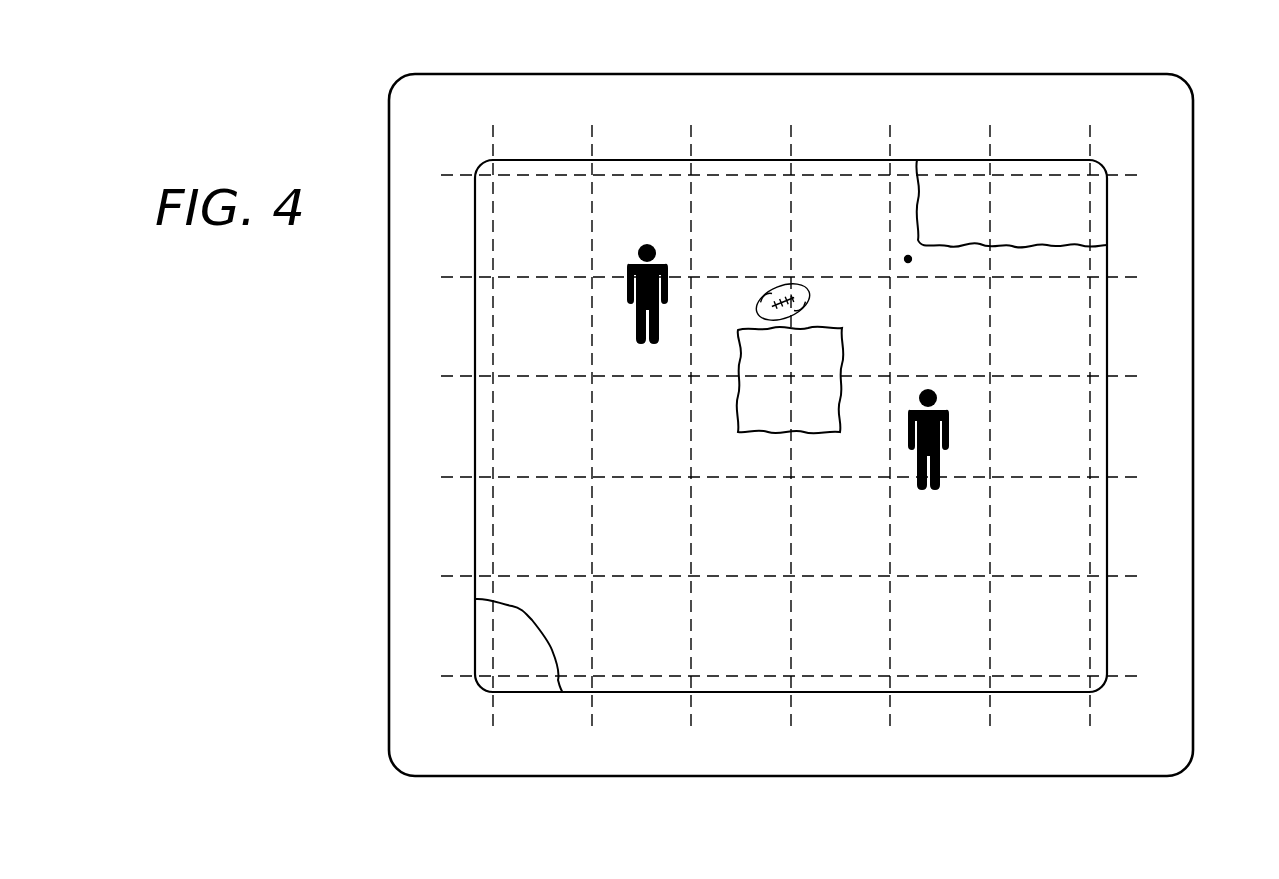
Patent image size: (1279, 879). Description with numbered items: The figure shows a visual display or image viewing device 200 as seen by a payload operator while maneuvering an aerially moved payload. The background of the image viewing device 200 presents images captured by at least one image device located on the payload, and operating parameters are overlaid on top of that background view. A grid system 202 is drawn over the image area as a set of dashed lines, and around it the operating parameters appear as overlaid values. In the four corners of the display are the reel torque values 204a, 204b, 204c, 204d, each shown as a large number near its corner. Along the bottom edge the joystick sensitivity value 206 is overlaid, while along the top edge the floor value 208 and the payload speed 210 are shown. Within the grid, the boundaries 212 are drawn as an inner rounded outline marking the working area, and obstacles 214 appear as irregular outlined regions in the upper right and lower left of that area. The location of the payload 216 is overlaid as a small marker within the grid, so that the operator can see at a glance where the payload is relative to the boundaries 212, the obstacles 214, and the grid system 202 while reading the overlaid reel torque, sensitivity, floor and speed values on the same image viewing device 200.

The image viewing device 200 is at (378, 133).
The grid system 202 is at (1158, 215).
The reel torque value 204a is at (448, 105).
The reel torque value 204b is at (1133, 102).
The reel torque value 204c is at (1118, 740).
The reel torque value 204d is at (420, 720).
The joystick sensitivity value 206 is at (808, 742).
The floor value 208 is at (770, 97).
The payload speed 210 is at (591, 80).
The boundaries 212 is at (1107, 360).
The obstacles 214 is at (948, 190).
The location of the payload 216 is at (912, 262).